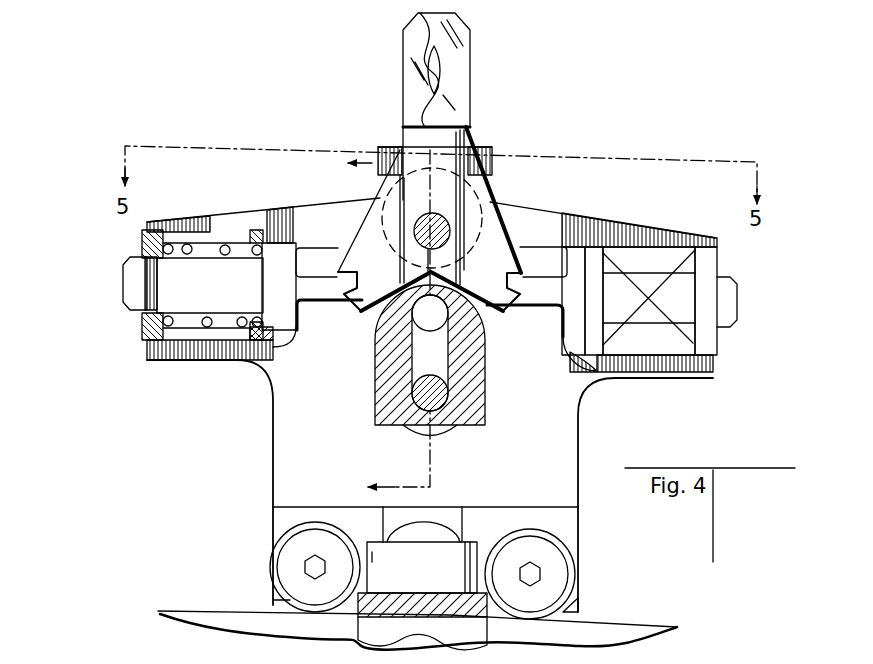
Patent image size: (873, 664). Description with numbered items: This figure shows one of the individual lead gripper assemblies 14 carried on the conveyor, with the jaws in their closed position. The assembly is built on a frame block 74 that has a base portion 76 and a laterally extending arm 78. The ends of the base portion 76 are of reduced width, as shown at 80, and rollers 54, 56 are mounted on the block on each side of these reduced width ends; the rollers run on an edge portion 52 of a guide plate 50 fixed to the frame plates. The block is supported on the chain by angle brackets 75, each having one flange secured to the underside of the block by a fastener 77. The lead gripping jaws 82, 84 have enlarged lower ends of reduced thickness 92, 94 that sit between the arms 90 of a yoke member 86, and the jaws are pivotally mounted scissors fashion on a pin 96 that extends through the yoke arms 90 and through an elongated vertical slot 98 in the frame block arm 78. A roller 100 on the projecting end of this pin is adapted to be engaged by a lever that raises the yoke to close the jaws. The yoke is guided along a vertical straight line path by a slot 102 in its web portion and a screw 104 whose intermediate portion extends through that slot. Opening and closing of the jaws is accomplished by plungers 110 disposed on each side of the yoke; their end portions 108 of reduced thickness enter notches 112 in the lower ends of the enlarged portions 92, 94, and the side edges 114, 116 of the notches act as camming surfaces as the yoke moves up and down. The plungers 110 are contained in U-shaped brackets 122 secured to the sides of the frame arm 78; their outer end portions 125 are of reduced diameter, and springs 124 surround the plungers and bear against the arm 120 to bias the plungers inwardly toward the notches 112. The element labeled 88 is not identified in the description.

The lead gripper assembly 14 is at (575, 102).
The guide plate 50 is at (620, 645).
The edge portion 52 is at (655, 625).
The roller 54 is at (268, 582).
The roller 56 is at (215, 663).
The frame block 74 is at (270, 443).
The angle bracket 75 is at (465, 633).
The base portion 76 is at (282, 514).
The fastener 77 is at (427, 535).
The laterally extending arm 78 is at (578, 425).
The reduced width end 80 is at (463, 560).
The lead gripping jaw 82 is at (463, 75).
The lead gripping jaw 84 is at (410, 72).
The yoke member 86 is at (478, 430).
The pin housing 88 is at (470, 398).
The yoke arm 90 is at (487, 170).
The enlarged lower end 92 is at (380, 218).
The enlarged lower end 94 is at (477, 222).
The pin 96 is at (420, 230).
The elongated vertical slot 98 is at (413, 325).
The roller 100 is at (508, 250).
The slot 102 is at (445, 345).
The screw 104 is at (420, 395).
The end portion 108 is at (327, 307).
The plunger 110 is at (283, 250).
The notch 112 is at (449, 283).
The side edge 114 is at (431, 262).
The side edge 116 is at (400, 318).
The arm 120 is at (143, 325).
The U-shaped bracket 122 is at (147, 243).
The spring 124 is at (183, 243).
The outer end portion 125 is at (163, 280).